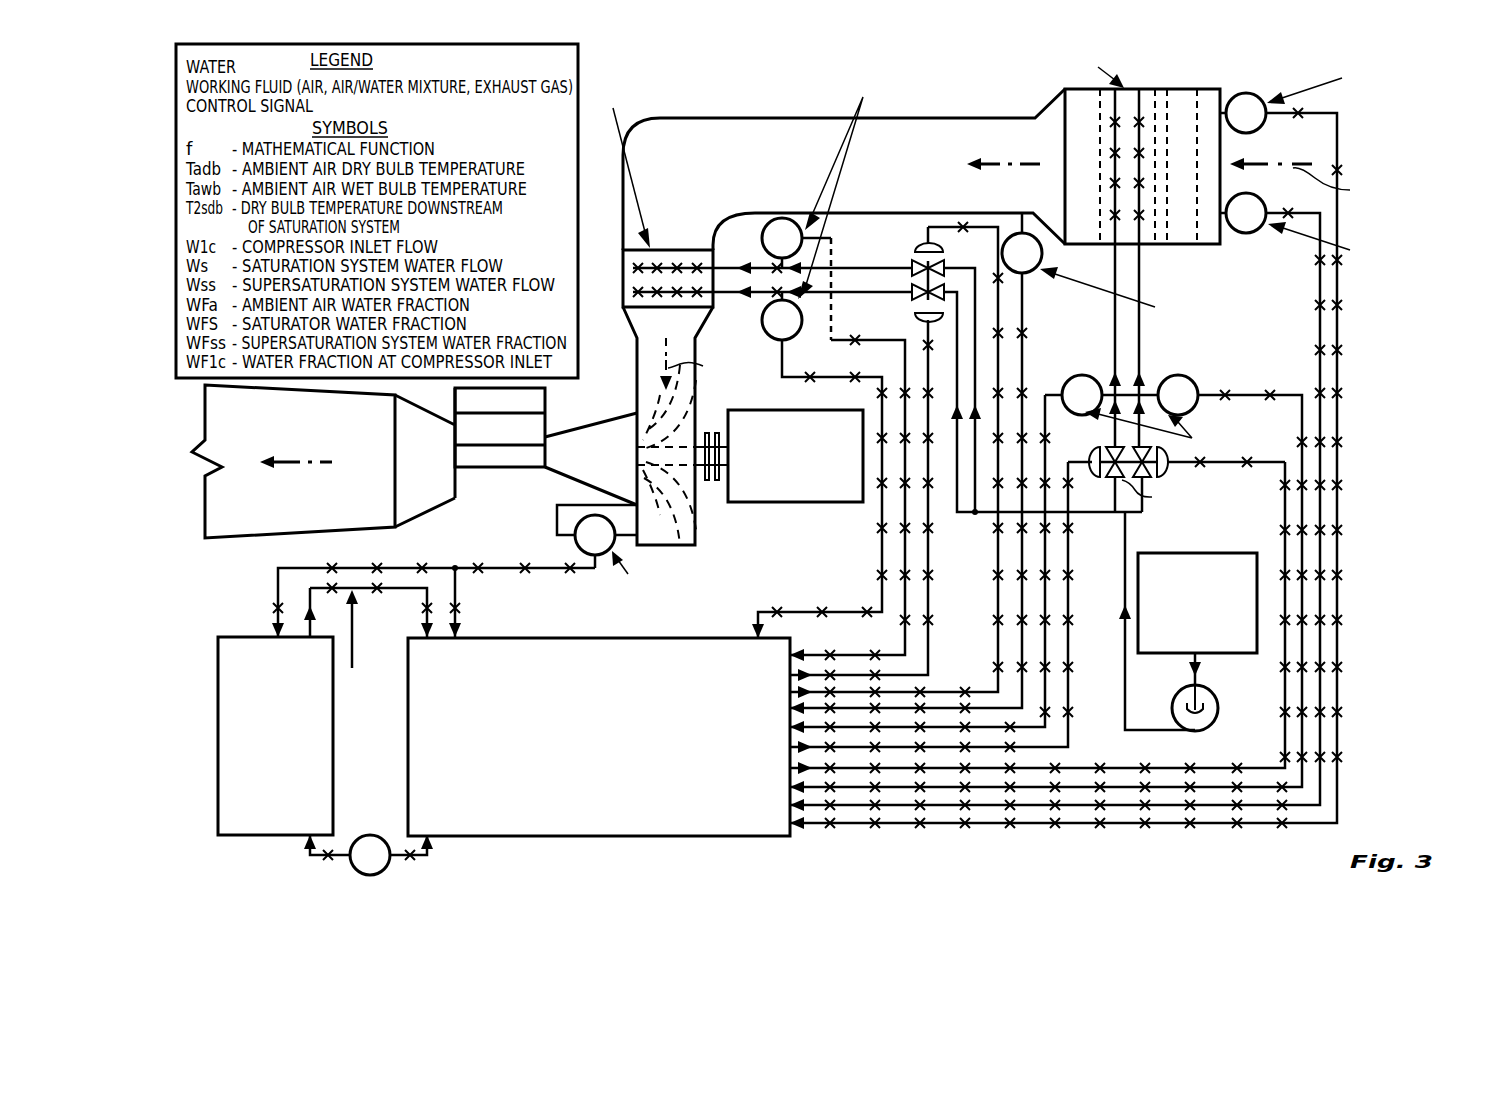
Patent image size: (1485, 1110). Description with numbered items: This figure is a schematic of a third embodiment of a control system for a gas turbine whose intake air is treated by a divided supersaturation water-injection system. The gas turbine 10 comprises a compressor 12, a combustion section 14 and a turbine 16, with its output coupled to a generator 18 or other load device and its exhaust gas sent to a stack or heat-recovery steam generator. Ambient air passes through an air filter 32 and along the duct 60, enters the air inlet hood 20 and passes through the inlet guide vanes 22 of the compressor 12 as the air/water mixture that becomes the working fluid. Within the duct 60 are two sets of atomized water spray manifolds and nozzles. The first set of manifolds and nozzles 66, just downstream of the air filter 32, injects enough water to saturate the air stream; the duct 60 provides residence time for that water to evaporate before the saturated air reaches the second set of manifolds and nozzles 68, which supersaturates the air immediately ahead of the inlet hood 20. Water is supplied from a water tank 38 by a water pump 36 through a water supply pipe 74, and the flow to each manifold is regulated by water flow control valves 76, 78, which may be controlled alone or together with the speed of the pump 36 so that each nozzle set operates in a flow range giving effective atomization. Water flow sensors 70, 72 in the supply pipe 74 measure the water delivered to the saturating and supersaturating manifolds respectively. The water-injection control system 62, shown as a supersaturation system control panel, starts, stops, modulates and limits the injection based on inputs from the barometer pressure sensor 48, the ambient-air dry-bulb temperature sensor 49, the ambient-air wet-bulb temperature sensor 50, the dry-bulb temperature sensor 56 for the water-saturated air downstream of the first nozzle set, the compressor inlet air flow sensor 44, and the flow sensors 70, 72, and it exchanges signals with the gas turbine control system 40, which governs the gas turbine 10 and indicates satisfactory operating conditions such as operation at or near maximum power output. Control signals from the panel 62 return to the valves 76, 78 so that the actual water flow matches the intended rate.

The gas turbine 10 is at (414, 461).
The compressor 12 is at (599, 462).
The combustion section 14 is at (510, 436).
The turbine 16 is at (432, 472).
The generator 18 is at (810, 496).
The air inlet hood 20 is at (697, 528).
The inlet guide vanes 22 is at (637, 415).
The air filter 32 is at (1183, 102).
The water pump 36 is at (1218, 703).
The water tank 38 is at (1207, 644).
The gas turbine control system 40 is at (290, 791).
The compressor air flow sensor 44 is at (615, 543).
The barometer pressure sensor 48 is at (390, 866).
The ambient-air dry-bulb temperature sensor 49 is at (1234, 93).
The ambient-air wet-bulb temperature sensor 50 is at (1241, 233).
The dry-bulb temperature sensor of water-saturated air 56 is at (1042, 258).
The duct 60 is at (792, 175).
The water-injection system control system 62 is at (600, 802).
The first set of manifolds and atomization nozzles 66 is at (1140, 247).
The second set of manifolds and atomization nozzles 68 is at (623, 270).
The water flow sensor 70 is at (1196, 388).
The water flow sensor 72 is at (764, 322).
The water supply pipe 74 is at (1141, 512).
The water flow control valve 76 is at (1168, 470).
The water flow control valve 78 is at (916, 251).